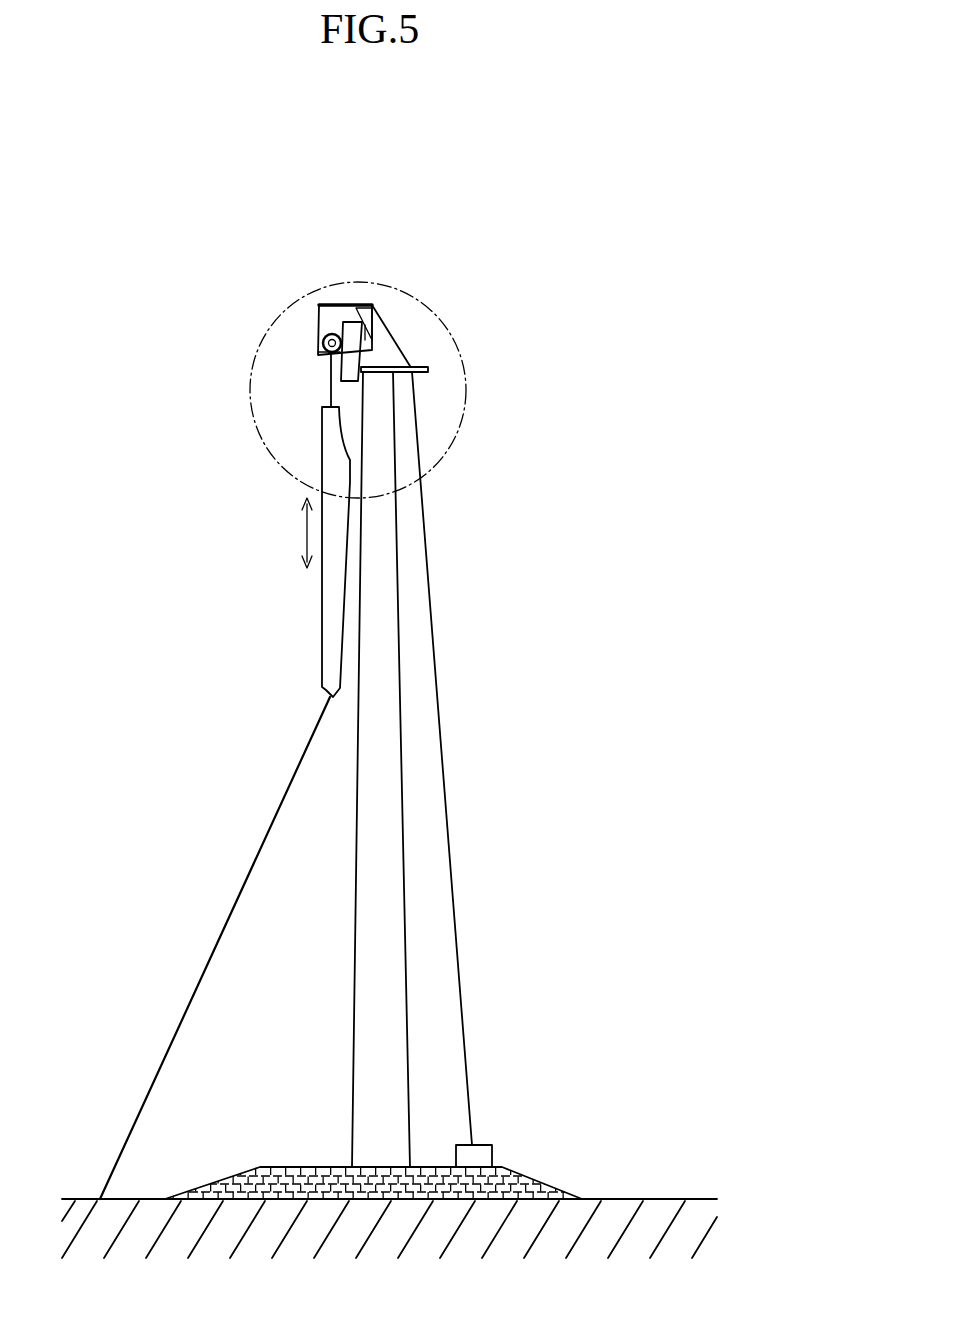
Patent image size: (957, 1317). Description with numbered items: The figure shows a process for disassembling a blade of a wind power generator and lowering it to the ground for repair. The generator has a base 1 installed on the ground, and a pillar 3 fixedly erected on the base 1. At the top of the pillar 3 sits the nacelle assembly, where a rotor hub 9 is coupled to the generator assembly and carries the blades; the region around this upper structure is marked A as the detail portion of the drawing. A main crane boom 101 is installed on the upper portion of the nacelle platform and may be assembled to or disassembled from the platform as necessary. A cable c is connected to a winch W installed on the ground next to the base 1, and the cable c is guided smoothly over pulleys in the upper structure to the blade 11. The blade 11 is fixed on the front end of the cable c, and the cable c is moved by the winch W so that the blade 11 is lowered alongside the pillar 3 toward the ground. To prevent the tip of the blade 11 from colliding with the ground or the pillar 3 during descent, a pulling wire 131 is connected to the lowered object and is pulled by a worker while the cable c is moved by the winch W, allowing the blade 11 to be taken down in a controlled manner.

The base 1 is at (389, 1181).
The pillar 3 is at (331, 769).
The rotor hub 9 is at (261, 373).
The blade 11 is at (277, 524).
The main crane boom 101 is at (374, 289).
The pulling wire 131 is at (215, 948).
The enlarged portion A is at (358, 336).
The cable c is at (507, 758).
The winch W is at (531, 1108).